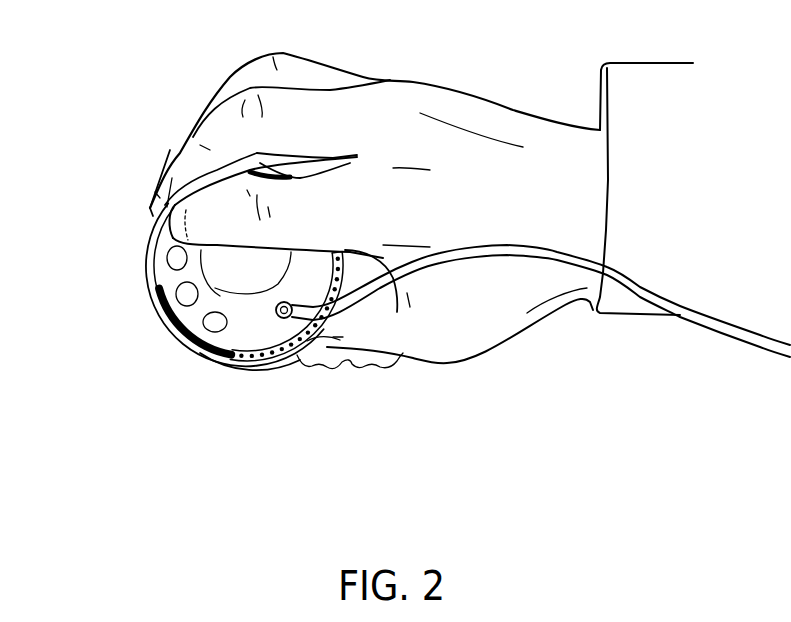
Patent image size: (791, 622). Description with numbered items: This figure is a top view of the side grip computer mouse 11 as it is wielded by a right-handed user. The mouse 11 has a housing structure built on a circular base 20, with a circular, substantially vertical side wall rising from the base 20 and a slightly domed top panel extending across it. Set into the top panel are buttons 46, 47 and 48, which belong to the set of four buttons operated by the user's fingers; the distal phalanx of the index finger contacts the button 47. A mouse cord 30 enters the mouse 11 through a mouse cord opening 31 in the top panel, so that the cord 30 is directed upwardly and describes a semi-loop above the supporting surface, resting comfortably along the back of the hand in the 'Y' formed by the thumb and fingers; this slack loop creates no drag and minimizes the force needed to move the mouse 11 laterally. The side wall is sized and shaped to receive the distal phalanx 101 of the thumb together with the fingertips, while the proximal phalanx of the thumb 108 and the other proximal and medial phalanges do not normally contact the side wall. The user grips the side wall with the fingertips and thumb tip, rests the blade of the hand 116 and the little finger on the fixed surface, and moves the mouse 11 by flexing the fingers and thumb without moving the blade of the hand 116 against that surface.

The mouse 11 is at (108, 240).
The circular base 20 is at (272, 370).
The mouse cord 30 is at (357, 303).
The mouse cord opening 31 is at (230, 362).
The button 46 is at (162, 259).
The button 47 is at (177, 305).
The button 48 is at (203, 330).
The distal phalanx of the thumb 101 is at (322, 363).
The proximal phalanx of the thumb 108 is at (400, 357).
The blade of the hand 116 is at (578, 103).